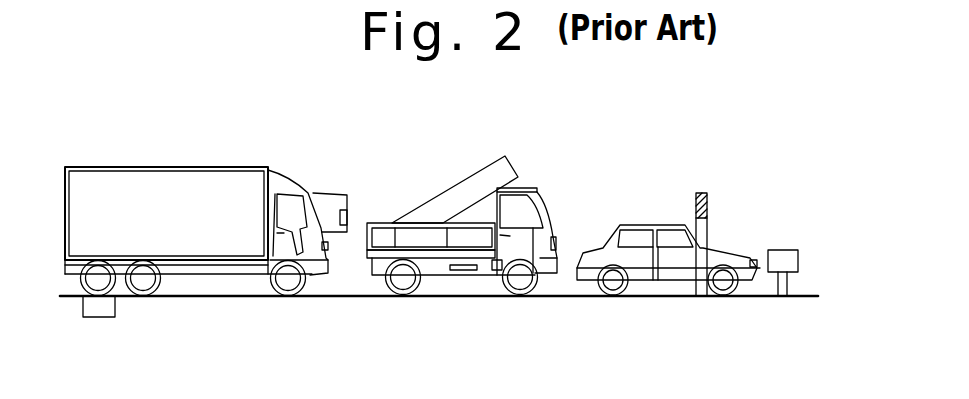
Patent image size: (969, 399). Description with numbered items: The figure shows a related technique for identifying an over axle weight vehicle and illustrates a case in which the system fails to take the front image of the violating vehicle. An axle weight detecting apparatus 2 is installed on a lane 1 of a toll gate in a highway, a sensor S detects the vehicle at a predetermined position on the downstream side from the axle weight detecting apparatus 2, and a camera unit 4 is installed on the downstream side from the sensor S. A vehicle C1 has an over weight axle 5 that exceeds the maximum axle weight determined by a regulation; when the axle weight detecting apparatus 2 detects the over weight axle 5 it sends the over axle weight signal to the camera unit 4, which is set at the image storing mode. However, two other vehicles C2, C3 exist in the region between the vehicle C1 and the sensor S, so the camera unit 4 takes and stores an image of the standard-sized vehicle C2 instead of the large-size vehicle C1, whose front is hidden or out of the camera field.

The lane 1 is at (806, 296).
The axle weight detecting apparatus 2 is at (100, 317).
The camera unit 4 is at (787, 250).
The over weight axle 5 is at (100, 280).
The sensor S is at (702, 193).
The vehicle C1 is at (202, 235).
The vehicle C2 is at (733, 250).
The vehicle C3 is at (533, 189).